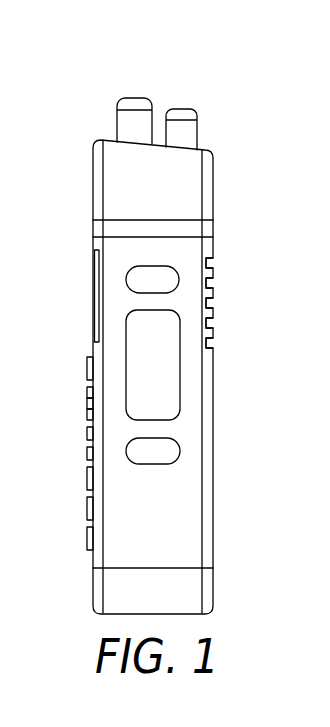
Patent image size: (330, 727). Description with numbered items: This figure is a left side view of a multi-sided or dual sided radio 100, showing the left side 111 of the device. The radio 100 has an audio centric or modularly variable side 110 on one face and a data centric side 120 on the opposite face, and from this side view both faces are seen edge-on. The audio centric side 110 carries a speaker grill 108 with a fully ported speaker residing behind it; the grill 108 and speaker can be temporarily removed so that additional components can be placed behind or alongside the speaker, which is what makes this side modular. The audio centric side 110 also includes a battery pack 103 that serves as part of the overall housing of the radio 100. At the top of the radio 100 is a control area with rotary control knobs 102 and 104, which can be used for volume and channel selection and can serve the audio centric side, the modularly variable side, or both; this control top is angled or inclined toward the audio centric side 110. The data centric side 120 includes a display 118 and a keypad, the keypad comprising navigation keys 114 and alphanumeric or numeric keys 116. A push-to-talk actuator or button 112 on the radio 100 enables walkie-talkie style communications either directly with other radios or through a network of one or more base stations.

The multi-sided radio 100 is at (72, 22).
The rotary control knob 102 is at (180, 108).
The battery pack 103 is at (188, 592).
The rotary control knob 104 is at (136, 97).
The speaker grill 108 is at (213, 275).
The audio centric or modularly variable side 110 is at (252, 323).
The left side 111 is at (163, 533).
The push-to-talk actuator or button 112 is at (180, 385).
The navigation keys 114 is at (87, 408).
The alphanumeric or numeric keys 116 is at (87, 478).
The display 118 is at (92, 283).
The data centric side 120 is at (78, 259).